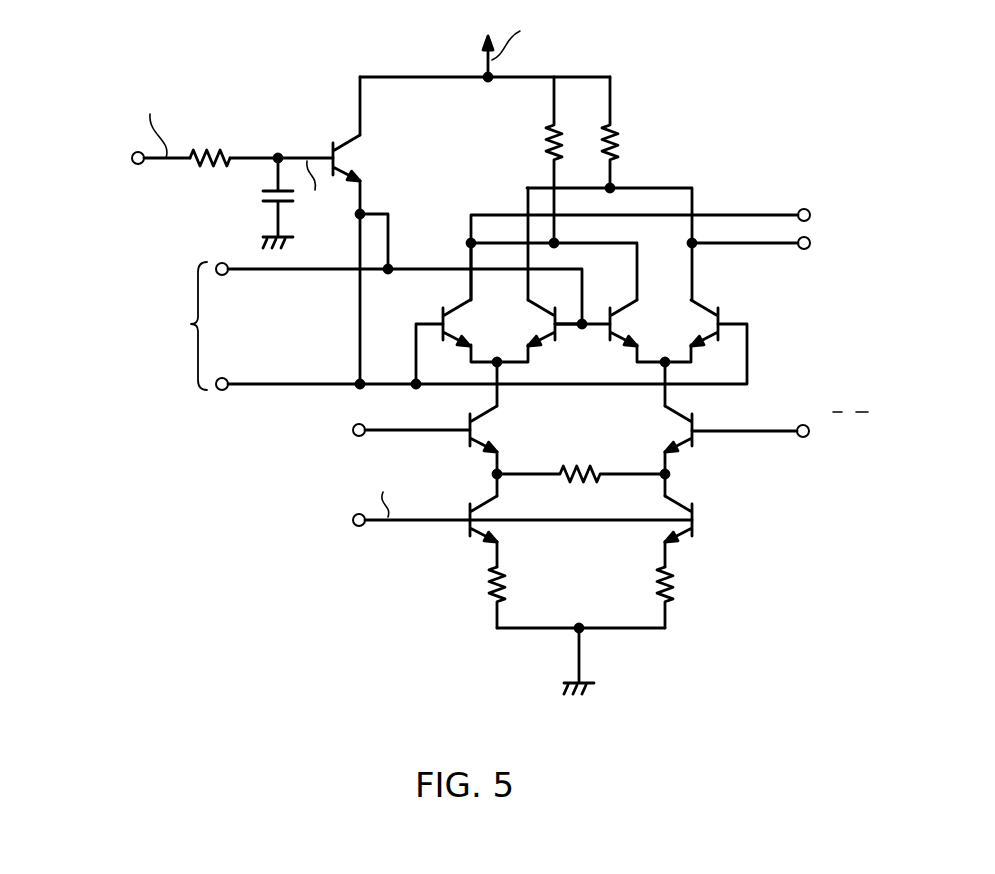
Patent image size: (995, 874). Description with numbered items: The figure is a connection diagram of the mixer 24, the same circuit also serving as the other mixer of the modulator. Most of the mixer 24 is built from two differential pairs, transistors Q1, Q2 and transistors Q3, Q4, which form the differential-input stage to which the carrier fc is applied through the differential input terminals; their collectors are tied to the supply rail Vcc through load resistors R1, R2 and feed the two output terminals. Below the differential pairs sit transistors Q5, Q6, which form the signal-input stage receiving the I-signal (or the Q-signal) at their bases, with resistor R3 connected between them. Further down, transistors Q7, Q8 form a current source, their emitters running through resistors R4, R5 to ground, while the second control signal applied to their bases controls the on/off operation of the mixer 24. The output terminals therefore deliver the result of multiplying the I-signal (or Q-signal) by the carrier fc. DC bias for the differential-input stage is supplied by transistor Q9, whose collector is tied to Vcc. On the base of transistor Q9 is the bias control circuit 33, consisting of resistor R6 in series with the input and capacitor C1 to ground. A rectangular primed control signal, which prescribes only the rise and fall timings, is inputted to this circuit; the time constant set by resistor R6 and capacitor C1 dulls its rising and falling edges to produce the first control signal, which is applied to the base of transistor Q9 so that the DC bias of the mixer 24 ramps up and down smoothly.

The mixer 24 is at (776, 56).
The bias control circuit 33 is at (270, 113).
The transistor Q1 is at (440, 312).
The transistor Q2 is at (556, 314).
The transistor Q3 is at (616, 325).
The transistor Q4 is at (720, 318).
The transistor Q5 is at (478, 432).
The transistor Q6 is at (682, 434).
The transistor Q7 is at (468, 510).
The transistor Q8 is at (696, 506).
The transistor Q9 is at (345, 160).
The resistor R1 is at (548, 138).
The resistor R2 is at (620, 150).
The resistor R3 is at (578, 470).
The resistor R4 is at (508, 576).
The resistor R5 is at (658, 580).
The resistor R6 is at (215, 150).
The capacitor C1 is at (263, 205).